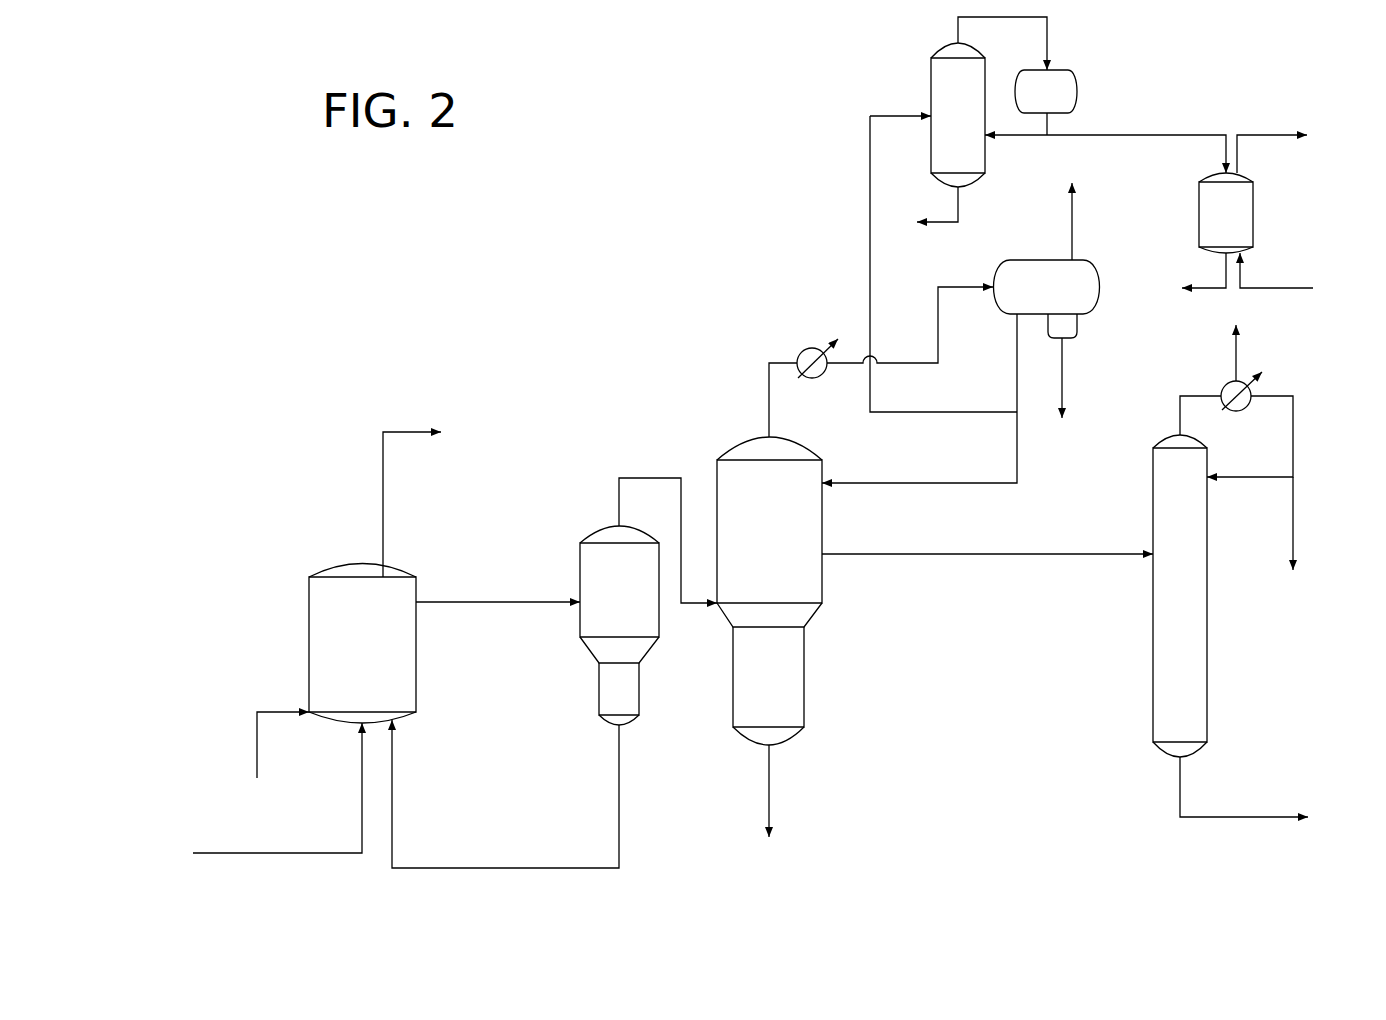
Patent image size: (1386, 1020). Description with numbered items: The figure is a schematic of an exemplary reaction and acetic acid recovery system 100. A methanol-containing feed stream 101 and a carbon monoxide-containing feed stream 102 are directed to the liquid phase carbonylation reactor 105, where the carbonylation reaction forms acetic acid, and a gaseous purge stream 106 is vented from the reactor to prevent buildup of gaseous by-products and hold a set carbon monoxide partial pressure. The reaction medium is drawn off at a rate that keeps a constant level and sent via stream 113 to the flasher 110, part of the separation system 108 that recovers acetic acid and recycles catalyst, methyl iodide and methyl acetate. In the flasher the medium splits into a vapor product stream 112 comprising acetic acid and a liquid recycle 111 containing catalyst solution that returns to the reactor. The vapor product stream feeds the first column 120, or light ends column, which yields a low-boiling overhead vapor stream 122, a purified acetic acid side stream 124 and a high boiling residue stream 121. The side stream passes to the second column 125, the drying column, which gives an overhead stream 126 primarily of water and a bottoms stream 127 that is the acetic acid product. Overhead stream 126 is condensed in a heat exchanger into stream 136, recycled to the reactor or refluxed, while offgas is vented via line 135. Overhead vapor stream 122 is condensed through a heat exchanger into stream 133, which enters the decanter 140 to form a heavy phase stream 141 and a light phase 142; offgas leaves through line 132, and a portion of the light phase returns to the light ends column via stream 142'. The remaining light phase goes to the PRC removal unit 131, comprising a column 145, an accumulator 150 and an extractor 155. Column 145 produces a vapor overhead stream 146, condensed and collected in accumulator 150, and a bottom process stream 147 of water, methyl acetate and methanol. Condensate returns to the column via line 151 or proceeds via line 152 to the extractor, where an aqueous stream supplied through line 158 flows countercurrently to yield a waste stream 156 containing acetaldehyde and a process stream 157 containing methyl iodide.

The reaction and acetic acid recovery system 100 is at (333, 352).
The methanol-containing feed stream 101 is at (307, 855).
The carbon monoxide-containing feed stream 102 is at (257, 737).
The liquid phase carbonylation reactor 105 is at (309, 630).
The gaseous purge stream 106 is at (383, 479).
The separation system 108 is at (715, 838).
The flasher 110 is at (600, 648).
The liquid recycle 111 is at (620, 808).
The vapor product stream 112 is at (652, 477).
The stream 113 is at (485, 600).
The first column 120 is at (800, 575).
The high boiling residue stream 121 is at (772, 783).
The low-boiling overhead vapor stream 122 is at (768, 383).
The side stream 124 is at (953, 556).
The second column 125 is at (1170, 620).
The overhead stream 126 is at (1182, 415).
The bottoms stream 127 is at (1238, 819).
The PRC's removal unit 131 is at (825, 145).
The line 132 is at (1073, 225).
The stream 133 is at (937, 316).
The line 135 is at (1237, 355).
The stream 136 is at (1295, 430).
The decanter 140 is at (1088, 295).
The heavy phase stream 141 is at (1063, 392).
The light phase 142 is at (943, 264).
The stream 142' is at (919, 427).
The column 145 is at (931, 80).
The vapor overhead stream 146 is at (957, 23).
The bottom process stream 147 is at (960, 205).
The accumulator 150 is at (1082, 88).
The line 151 is at (1017, 138).
The line 152 is at (1128, 140).
The extractor 155 is at (1253, 190).
The waste stream 156 is at (1262, 131).
The process stream 157 is at (1208, 292).
The line 158 is at (1285, 288).